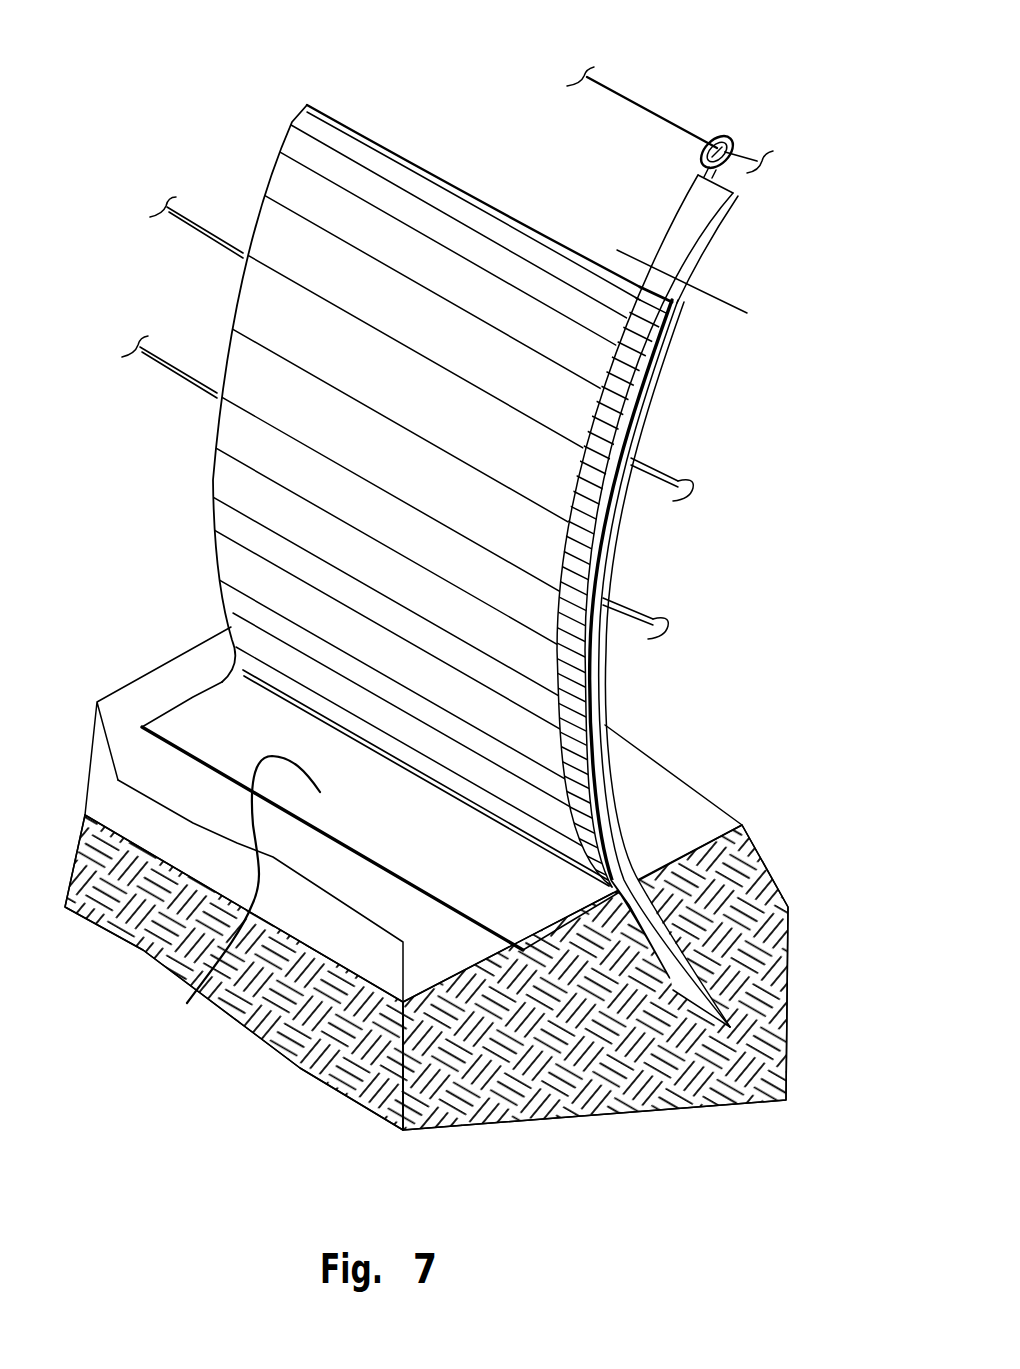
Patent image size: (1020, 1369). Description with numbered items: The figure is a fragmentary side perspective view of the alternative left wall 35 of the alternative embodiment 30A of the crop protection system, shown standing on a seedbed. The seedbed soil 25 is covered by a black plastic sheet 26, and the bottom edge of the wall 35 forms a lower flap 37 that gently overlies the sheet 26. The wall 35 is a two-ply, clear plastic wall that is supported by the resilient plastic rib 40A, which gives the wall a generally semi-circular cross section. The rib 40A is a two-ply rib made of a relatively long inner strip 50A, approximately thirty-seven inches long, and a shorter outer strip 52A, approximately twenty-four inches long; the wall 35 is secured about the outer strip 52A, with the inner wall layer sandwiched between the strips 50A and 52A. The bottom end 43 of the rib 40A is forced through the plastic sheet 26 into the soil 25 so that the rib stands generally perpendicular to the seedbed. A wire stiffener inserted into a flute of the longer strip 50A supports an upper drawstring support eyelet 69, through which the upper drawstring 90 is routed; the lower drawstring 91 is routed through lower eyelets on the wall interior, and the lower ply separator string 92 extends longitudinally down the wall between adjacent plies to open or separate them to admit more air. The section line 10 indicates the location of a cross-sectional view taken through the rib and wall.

The section line 10- 10 is at (627, 235).
The seedbed soil 25 is at (769, 1075).
The black plastic sheet 26 is at (678, 822).
The alternative embodiment 30A is at (444, 113).
The alternative wall 35 is at (237, 475).
The lower flap 37 is at (187, 1003).
The resilient plastic rib 40A is at (606, 678).
The bottom end of rib 43 is at (667, 990).
The inner strip 50A is at (697, 234).
The outer strip 52A is at (590, 507).
The upper drawstring support eyelet 69 is at (718, 133).
The upper drawstring 90 is at (600, 82).
The lower drawstring 91 is at (665, 475).
The lower ply separator string 92 is at (701, 623).